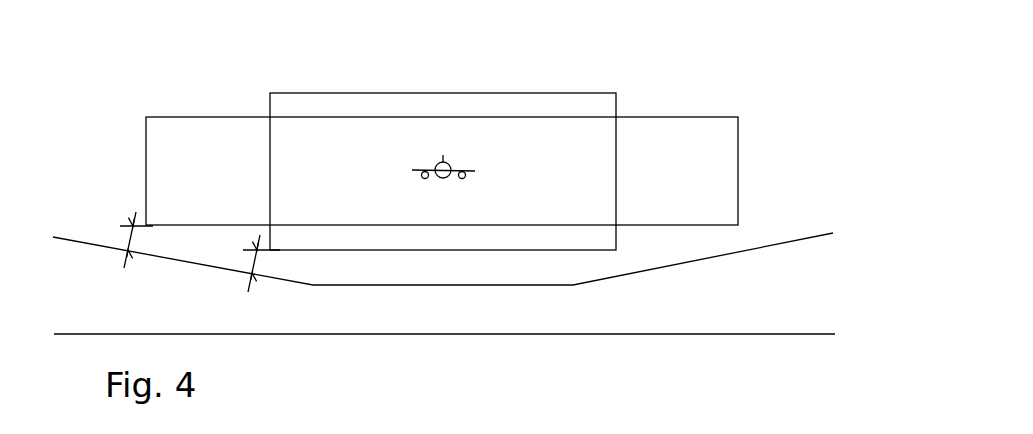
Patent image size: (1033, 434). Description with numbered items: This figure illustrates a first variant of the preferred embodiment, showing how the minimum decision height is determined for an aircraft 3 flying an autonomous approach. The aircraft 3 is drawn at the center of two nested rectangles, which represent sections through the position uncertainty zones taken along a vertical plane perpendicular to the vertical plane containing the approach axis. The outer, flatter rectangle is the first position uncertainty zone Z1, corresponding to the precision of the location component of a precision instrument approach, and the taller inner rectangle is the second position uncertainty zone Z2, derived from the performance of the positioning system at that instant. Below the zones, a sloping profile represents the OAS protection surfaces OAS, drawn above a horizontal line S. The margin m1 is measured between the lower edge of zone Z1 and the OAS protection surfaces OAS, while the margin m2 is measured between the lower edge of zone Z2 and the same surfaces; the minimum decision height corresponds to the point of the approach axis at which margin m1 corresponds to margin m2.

The first position uncertainty zone Z1 is at (672, 116).
The second position uncertainty zone Z2 is at (553, 92).
The aircraft 3 is at (484, 157).
The OAS protection surfaces OAS is at (790, 243).
The ground surface S is at (785, 333).
The margin m1 is at (127, 240).
The margin m2 is at (257, 258).